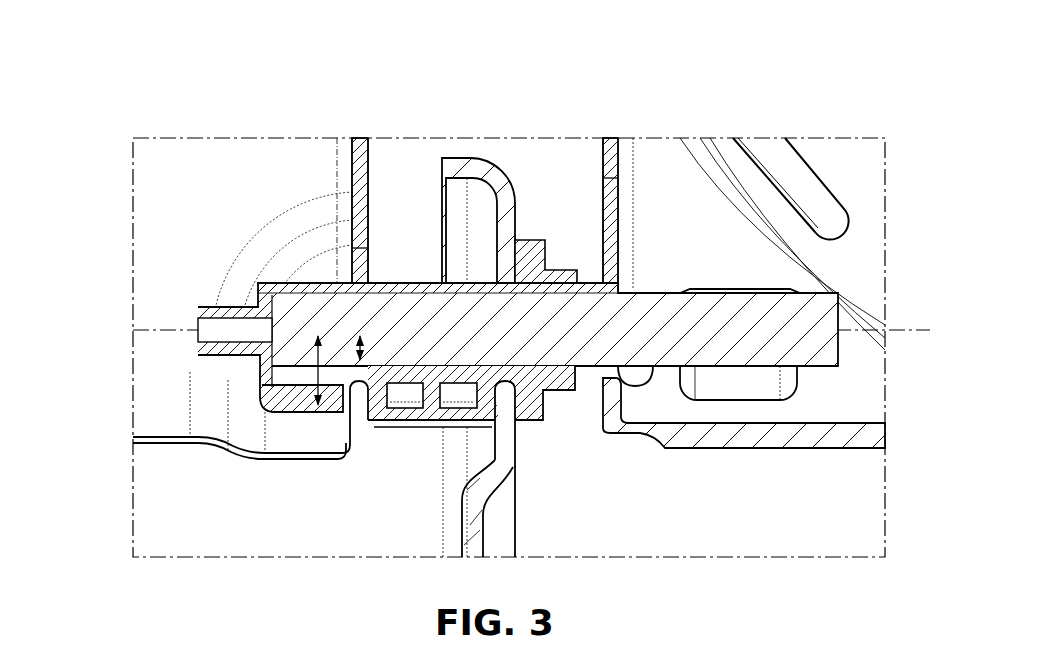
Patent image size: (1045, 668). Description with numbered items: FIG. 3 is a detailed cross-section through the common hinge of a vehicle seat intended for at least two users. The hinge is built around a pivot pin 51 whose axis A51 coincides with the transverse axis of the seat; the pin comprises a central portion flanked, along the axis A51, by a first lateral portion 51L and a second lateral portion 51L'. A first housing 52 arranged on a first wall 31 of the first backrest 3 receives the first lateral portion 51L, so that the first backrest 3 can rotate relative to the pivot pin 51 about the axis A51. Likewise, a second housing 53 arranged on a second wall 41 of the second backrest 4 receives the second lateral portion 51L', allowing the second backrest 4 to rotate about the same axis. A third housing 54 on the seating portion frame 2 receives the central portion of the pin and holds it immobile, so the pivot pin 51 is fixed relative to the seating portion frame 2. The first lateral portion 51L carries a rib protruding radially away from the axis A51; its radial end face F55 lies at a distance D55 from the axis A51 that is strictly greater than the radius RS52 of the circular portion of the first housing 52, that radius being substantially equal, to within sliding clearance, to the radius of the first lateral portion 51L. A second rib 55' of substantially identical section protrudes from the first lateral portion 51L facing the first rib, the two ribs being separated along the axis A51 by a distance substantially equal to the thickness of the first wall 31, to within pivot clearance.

The seating portion frame 2 is at (533, 525).
The first backrest 3 is at (262, 118).
The second backrest 4 is at (848, 118).
The first wall 31 is at (370, 163).
The second wall 41 is at (598, 158).
The pivot pin 51 is at (302, 422).
The first lateral portion 51L is at (405, 229).
The second lateral portion 51L' is at (728, 251).
The first housing 52 is at (347, 278).
The second housing 53 is at (627, 306).
The third housing 54 is at (510, 384).
The second rib 55' is at (432, 469).
The radial end face F55 is at (267, 422).
The distance D55 is at (318, 372).
The radius of the circular portion RS52 is at (360, 365).
The axis A51 is at (913, 320).